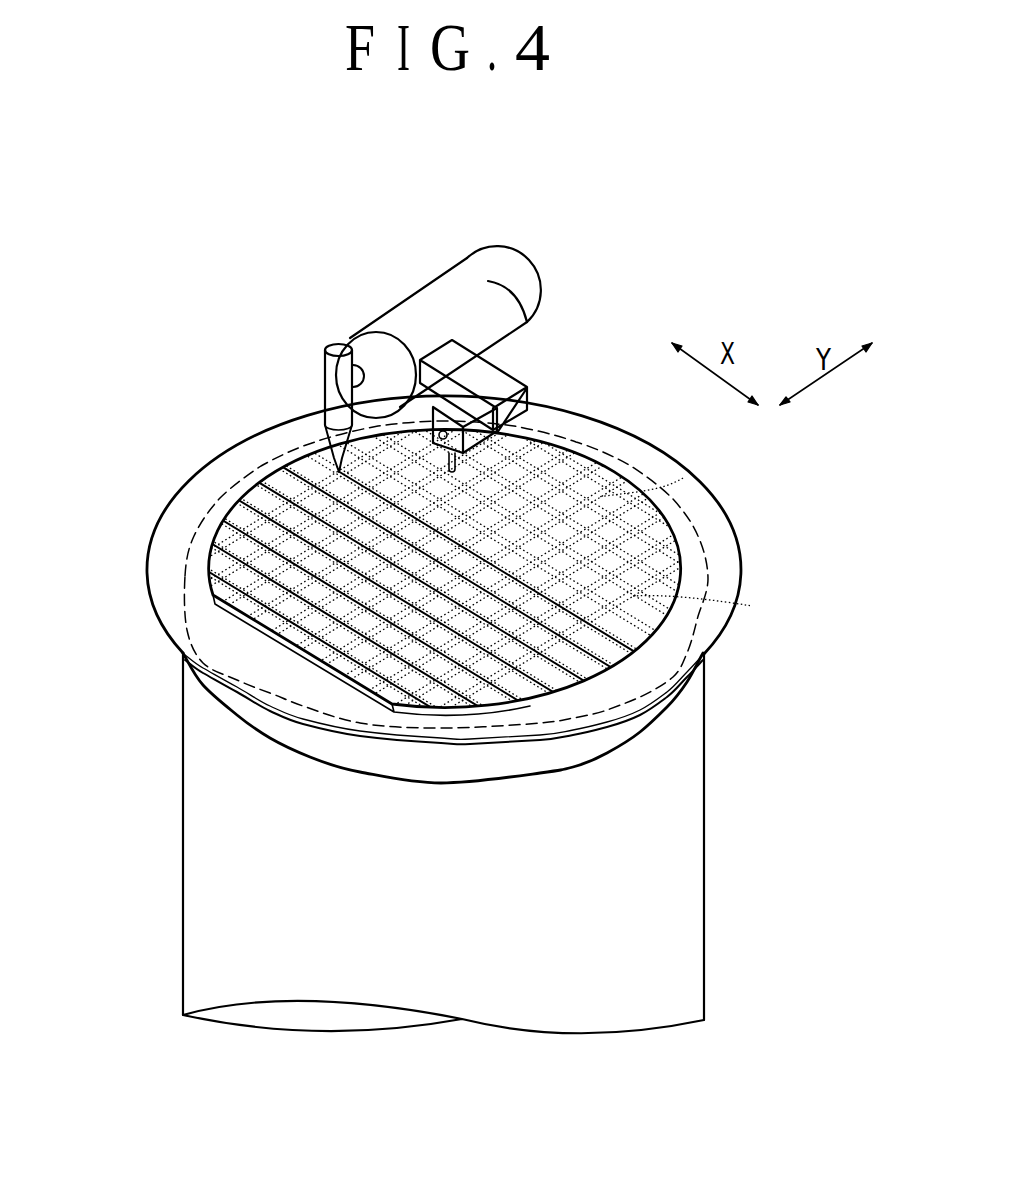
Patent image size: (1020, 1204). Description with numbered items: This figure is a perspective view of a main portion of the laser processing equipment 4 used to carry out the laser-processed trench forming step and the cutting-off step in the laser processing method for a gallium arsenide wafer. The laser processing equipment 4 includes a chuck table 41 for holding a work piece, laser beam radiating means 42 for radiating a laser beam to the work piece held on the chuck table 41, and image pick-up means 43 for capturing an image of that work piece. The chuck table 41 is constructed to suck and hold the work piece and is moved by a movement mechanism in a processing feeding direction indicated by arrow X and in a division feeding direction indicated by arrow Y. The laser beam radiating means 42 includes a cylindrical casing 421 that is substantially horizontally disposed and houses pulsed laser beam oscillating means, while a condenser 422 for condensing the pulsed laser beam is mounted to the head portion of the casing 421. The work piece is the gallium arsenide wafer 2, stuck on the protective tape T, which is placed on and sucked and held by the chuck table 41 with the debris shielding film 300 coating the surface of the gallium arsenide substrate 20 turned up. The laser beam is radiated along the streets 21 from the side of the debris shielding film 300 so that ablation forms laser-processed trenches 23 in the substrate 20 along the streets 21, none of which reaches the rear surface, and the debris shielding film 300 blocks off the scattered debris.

The gallium arsenide wafer 2 is at (678, 530).
The laser processing equipment 4 is at (243, 400).
The gallium arsenide (GaAs) substrate 20 is at (640, 652).
The streets 21 is at (683, 478).
The laser-processed trenches 23 is at (507, 693).
The chuck table 41 is at (180, 817).
The laser beam radiating means 42 is at (406, 327).
The image pick-up means 43 is at (502, 392).
The debris shielding film 300 is at (577, 465).
The cylindrical casing 421 is at (466, 283).
The condenser 422 is at (330, 353).
The protective tape T is at (185, 513).